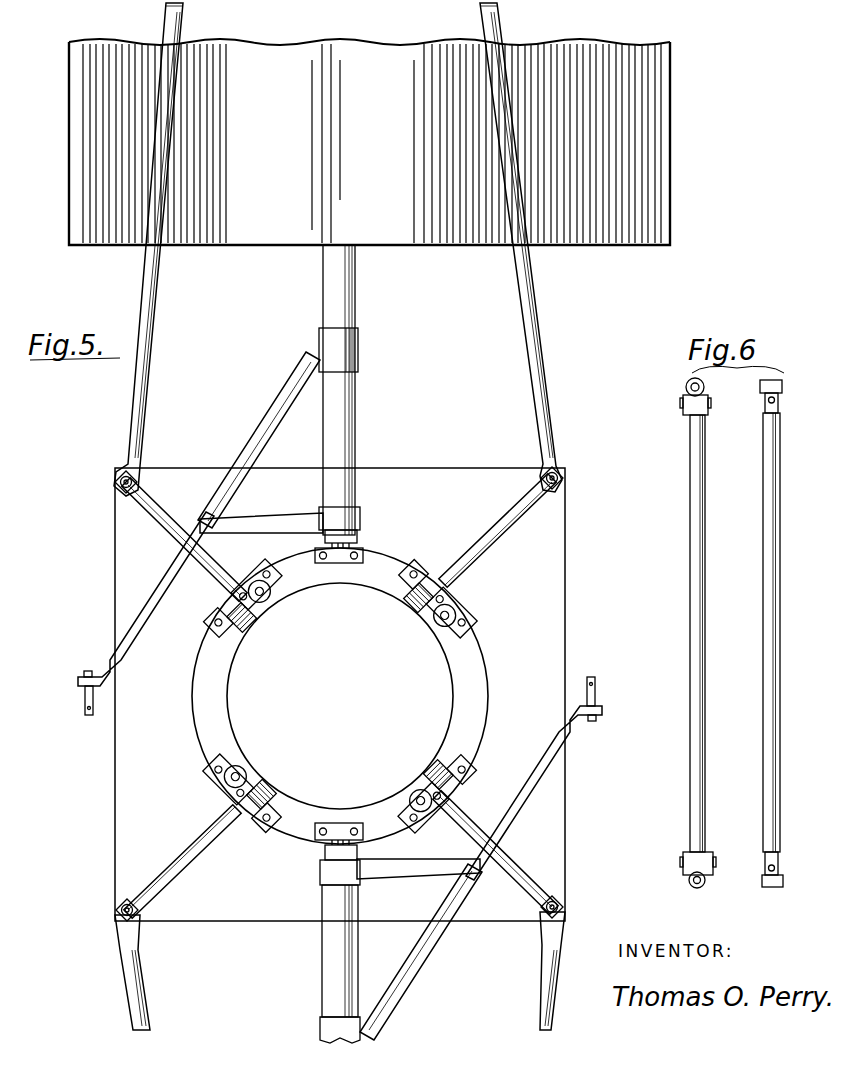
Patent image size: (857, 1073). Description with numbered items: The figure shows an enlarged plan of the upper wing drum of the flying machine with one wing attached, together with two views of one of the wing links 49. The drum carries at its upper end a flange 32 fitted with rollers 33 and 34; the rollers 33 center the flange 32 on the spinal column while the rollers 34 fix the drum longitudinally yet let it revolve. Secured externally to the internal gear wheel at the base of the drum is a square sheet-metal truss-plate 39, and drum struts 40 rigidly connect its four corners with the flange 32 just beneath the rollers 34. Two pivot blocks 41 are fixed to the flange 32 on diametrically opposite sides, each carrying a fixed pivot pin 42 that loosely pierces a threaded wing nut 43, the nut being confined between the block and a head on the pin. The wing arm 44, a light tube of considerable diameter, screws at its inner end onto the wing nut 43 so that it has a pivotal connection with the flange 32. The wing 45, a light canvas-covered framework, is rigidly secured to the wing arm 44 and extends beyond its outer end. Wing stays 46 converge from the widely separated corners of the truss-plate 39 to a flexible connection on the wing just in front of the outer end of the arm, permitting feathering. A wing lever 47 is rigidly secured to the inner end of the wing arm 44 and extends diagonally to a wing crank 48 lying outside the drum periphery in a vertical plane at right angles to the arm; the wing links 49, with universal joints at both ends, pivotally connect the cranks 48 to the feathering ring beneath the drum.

In FIG. 5, the flange 32 is at (486, 678).
In FIG. 5, the roller 33 is at (271, 598).
In FIG. 5, the roller 34 is at (248, 619).
In FIG. 5, the truss-plate 39 is at (558, 572).
In FIG. 5, the drum strut 40 is at (158, 510).
In FIG. 5, the pivot block 41 is at (349, 562).
In FIG. 5, the pivot pin 42 is at (336, 550).
In FIG. 5, the wing nut 43 is at (358, 539).
In FIG. 5, the wing arm 44 is at (343, 291).
In FIG. 5, the wing 45 is at (369, 142).
In FIG. 5, the wing stay 46 is at (143, 283).
In FIG. 5, the wing lever 47 is at (253, 448).
In FIG. 5, the wing crank 48 is at (84, 698).
In FIG. 6, the wing link 49 is at (690, 512).